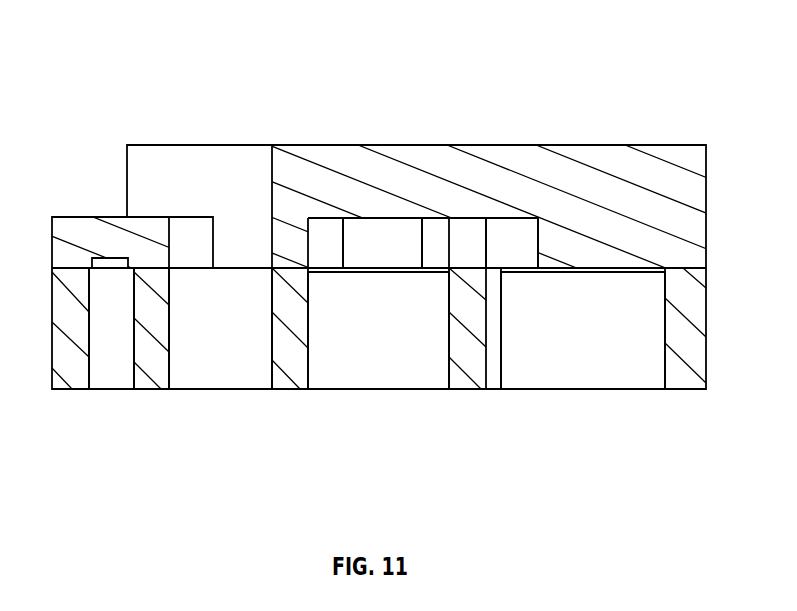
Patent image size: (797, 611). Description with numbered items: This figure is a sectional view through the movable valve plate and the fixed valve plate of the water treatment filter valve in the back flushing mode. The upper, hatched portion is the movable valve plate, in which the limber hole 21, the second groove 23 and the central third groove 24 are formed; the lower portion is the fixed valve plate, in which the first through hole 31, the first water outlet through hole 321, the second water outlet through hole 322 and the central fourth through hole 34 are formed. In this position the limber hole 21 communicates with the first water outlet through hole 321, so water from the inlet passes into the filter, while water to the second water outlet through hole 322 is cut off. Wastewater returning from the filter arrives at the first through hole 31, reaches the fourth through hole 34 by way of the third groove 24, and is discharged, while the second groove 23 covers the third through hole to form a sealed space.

The limber hole 21 is at (245, 225).
The third groove 24 is at (387, 237).
The second groove 23 is at (513, 243).
The second water outlet through hole 322 is at (110, 342).
The first water outlet through hole 321 is at (250, 330).
The fourth through hole 34 is at (388, 333).
The first through hole 31 is at (545, 358).